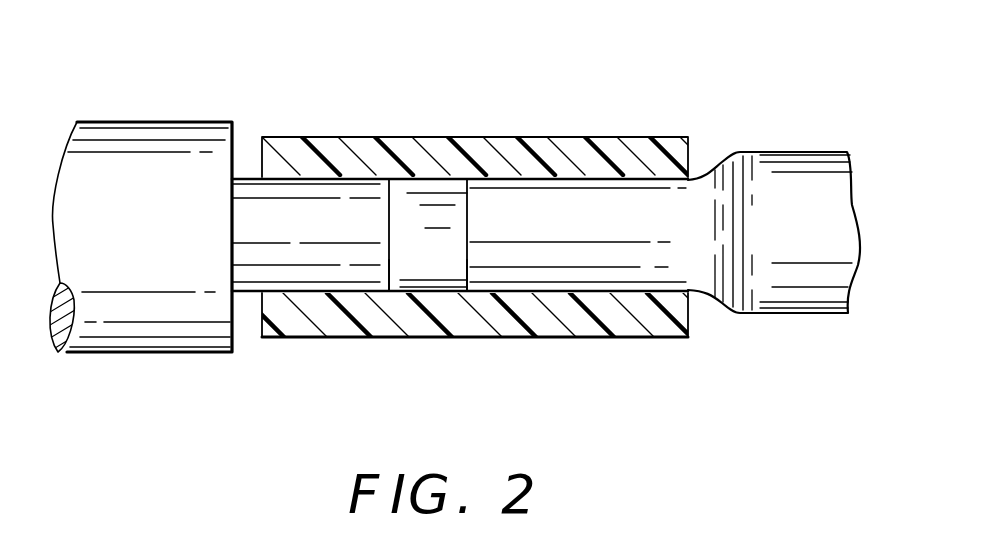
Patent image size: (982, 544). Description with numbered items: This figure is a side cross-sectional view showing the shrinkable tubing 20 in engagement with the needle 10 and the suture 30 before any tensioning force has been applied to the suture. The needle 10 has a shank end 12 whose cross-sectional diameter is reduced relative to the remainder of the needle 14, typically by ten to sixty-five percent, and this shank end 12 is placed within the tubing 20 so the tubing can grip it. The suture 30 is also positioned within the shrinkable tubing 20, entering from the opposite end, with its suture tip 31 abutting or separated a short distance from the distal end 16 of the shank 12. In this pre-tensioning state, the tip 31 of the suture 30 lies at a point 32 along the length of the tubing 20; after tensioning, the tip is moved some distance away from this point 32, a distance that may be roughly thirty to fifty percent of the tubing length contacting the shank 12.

The needle 10 is at (154, 113).
The shank end 12 is at (358, 193).
The remainder of the needle 14 is at (97, 353).
The distal end 16 is at (388, 260).
The shrinkable tubing 20 is at (632, 137).
The suture 30 is at (765, 143).
The suture tip 31 is at (463, 257).
The point 32 is at (466, 260).